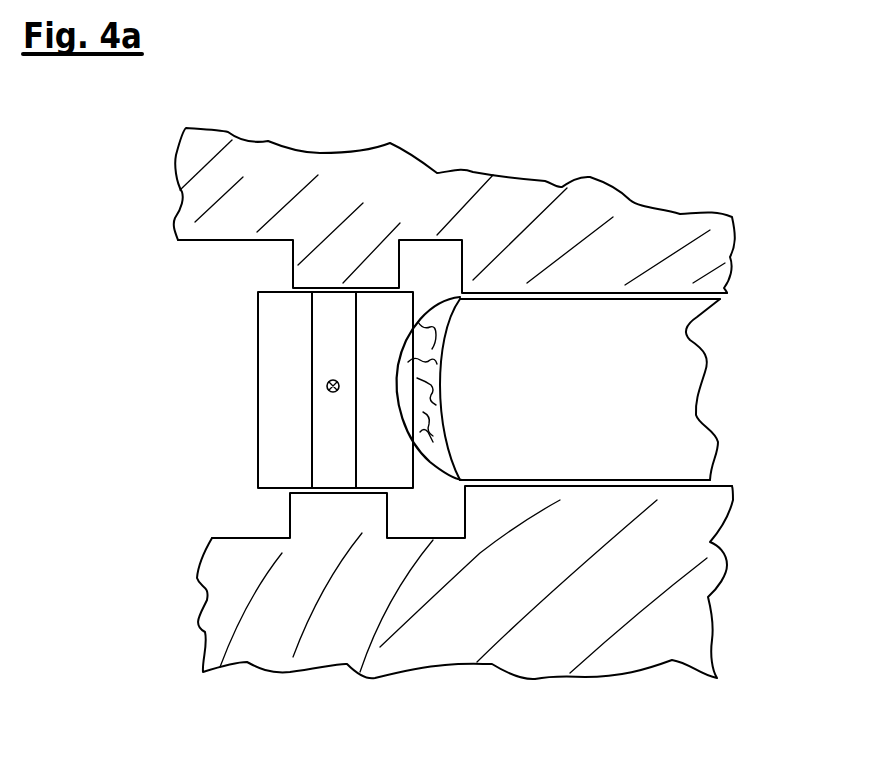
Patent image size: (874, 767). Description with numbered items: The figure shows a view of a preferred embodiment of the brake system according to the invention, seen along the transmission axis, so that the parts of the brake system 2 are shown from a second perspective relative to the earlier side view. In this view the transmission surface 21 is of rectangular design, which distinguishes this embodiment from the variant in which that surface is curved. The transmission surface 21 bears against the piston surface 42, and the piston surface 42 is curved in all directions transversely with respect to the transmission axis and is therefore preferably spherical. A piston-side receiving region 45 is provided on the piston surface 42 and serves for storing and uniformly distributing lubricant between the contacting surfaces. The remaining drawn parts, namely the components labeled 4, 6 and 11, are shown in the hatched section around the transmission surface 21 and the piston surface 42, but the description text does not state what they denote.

The seal carrier / sealing arrangement 2 is at (276, 289).
The shaft 4 is at (678, 384).
The housing 6 is at (695, 548).
The pivot axis / rotation point 11 is at (333, 380).
The transmission surface 21 is at (396, 312).
The piston surface 42 is at (435, 440).
The piston-side receiving region 45 is at (397, 393).